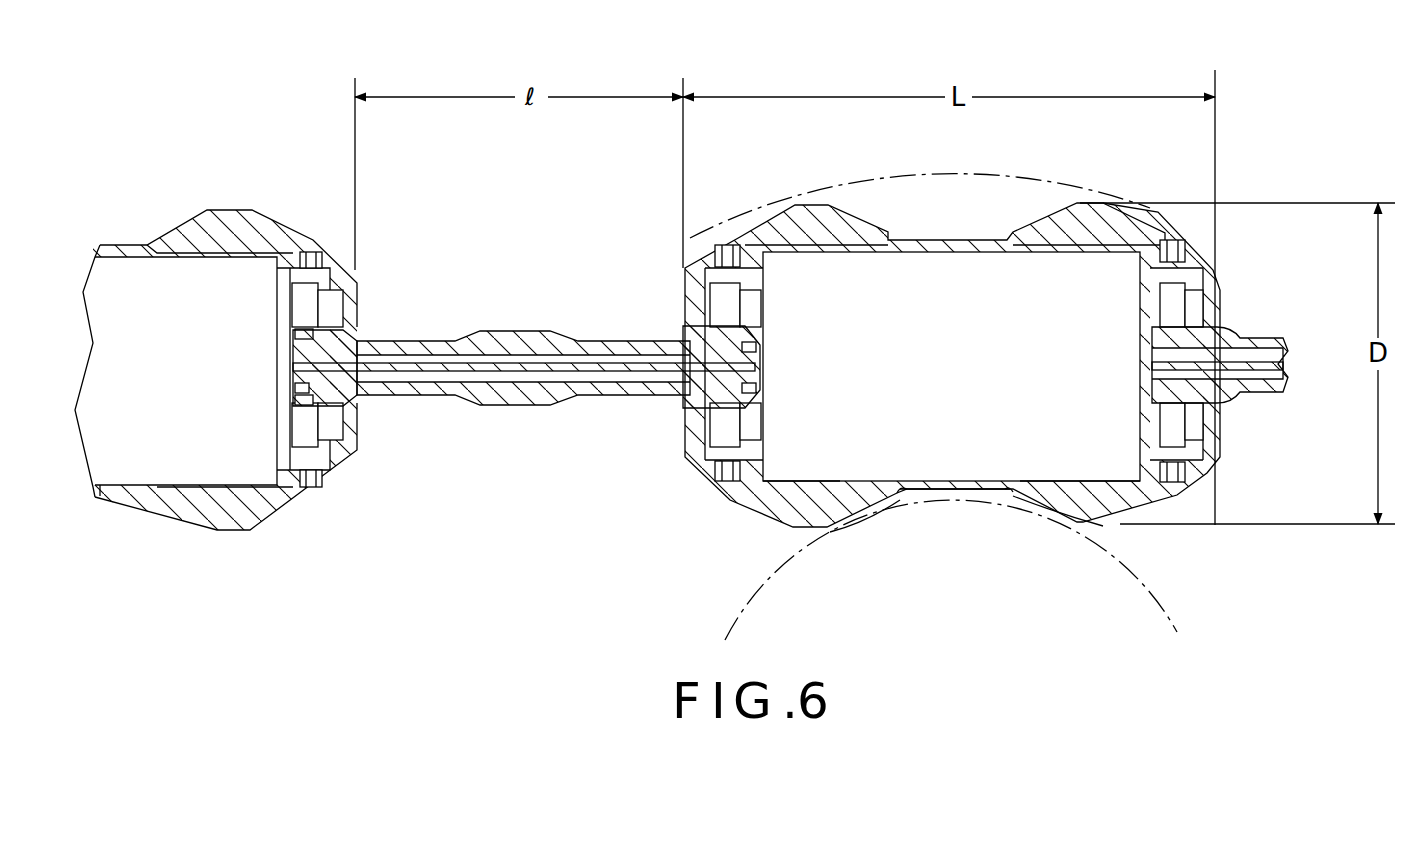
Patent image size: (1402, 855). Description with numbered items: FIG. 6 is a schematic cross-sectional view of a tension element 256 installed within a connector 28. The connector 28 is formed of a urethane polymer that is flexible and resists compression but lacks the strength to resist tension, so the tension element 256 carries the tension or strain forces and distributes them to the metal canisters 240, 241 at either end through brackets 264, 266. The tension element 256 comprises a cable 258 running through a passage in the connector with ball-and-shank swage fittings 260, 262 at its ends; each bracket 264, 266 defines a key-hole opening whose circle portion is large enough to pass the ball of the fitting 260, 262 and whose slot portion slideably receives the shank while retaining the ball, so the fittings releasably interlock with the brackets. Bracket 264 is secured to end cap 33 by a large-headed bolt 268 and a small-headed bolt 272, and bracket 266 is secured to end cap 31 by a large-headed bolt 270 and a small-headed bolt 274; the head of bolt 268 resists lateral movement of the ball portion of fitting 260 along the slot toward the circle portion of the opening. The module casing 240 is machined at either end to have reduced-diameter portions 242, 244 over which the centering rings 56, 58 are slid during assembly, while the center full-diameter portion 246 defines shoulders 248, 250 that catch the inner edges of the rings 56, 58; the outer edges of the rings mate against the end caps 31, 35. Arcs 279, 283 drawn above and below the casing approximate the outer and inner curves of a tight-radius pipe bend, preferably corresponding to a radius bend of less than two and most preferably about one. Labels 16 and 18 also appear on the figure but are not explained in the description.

The roller assembly 16 is at (952, 329).
The support housing 18 is at (216, 333).
The connector 28 is at (524, 337).
The arc 279 is at (1052, 168).
The large-headed bolt 268 is at (292, 340).
The bracket 264 is at (292, 356).
The ball-and-shank swage fitting 260 is at (292, 372).
The small-headed bolt 272 is at (292, 393).
The metal canister 241 is at (173, 485).
The cable 258 is at (435, 372).
The tension element 256 is at (606, 383).
The large-headed bolt 270 is at (757, 323).
The bracket 266 is at (752, 350).
The ball-and-shank swage fitting 262 is at (760, 365).
The small-headed bolt 274 is at (748, 390).
The module casing 240 is at (1098, 250).
The reduced-diameter portion 242 is at (848, 477).
The center full-diameter portion 246 is at (969, 478).
The reduced-diameter portion 244 is at (1061, 476).
The shoulder 248 is at (903, 497).
The shoulder 250 is at (1000, 500).
The ring 56 is at (1090, 530).
The ring 58 is at (773, 528).
The arc 283 is at (785, 598).
The end cap 33 is at (276, 405).
The end cap 31 is at (740, 392).
The end cap 35 is at (1222, 471).